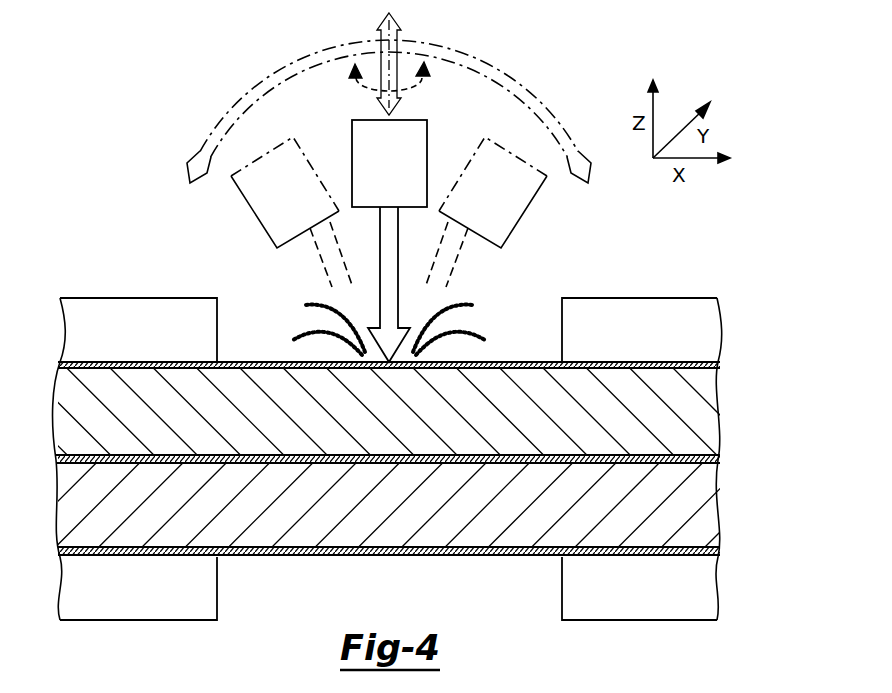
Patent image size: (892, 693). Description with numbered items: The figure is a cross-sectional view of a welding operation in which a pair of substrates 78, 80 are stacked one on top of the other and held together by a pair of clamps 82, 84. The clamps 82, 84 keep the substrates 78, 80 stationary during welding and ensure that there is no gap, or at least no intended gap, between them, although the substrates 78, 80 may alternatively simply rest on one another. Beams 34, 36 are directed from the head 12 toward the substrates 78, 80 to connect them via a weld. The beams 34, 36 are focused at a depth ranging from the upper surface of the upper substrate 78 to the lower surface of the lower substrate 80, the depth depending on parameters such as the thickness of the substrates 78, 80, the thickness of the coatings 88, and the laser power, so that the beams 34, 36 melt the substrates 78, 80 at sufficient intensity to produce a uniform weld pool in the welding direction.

The head 12 is at (428, 150).
The beam 34 is at (390, 276).
The beam 36 is at (390, 246).
The substrate 78 is at (716, 414).
The substrate 80 is at (700, 498).
The clamp 82 is at (592, 298).
The clamp 84 is at (167, 298).
The coatings 88 is at (718, 366).